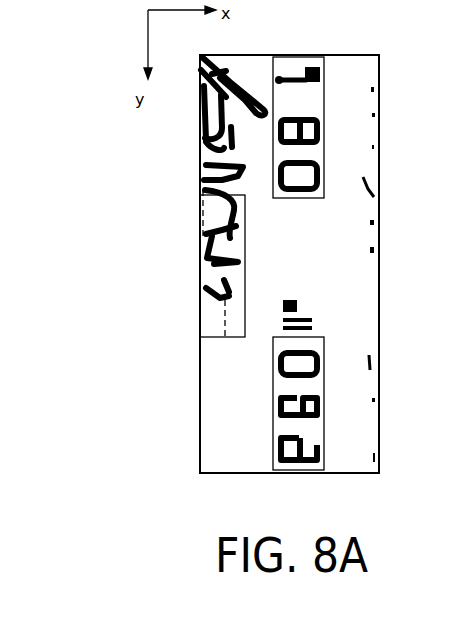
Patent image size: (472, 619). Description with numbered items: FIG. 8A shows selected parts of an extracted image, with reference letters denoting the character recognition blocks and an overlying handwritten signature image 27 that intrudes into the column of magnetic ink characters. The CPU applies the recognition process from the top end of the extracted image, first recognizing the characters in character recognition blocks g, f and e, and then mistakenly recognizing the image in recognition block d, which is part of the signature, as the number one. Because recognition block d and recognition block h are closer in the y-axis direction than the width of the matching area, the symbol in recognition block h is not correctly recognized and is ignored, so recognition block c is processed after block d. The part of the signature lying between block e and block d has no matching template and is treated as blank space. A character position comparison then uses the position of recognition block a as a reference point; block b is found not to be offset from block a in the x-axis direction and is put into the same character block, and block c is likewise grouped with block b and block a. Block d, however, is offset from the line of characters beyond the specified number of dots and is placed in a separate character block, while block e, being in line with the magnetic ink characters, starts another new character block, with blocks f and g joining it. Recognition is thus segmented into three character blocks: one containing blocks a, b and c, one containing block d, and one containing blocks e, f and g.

The handwritten signature region 27 is at (207, 231).
The character recognition block a is at (312, 450).
The character recognition block b is at (312, 407).
The character recognition block c is at (312, 364).
The character recognition block d is at (233, 266).
The character recognition block e is at (312, 176).
The character recognition block f is at (310, 131).
The character recognition block g is at (309, 80).
The character recognition block h is at (313, 314).